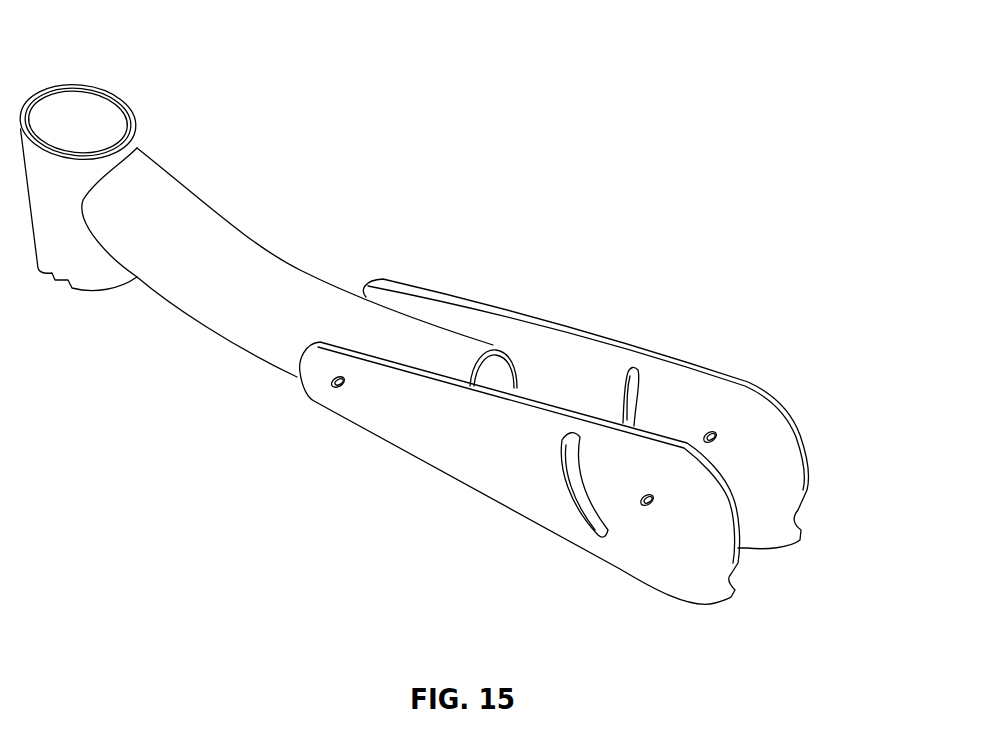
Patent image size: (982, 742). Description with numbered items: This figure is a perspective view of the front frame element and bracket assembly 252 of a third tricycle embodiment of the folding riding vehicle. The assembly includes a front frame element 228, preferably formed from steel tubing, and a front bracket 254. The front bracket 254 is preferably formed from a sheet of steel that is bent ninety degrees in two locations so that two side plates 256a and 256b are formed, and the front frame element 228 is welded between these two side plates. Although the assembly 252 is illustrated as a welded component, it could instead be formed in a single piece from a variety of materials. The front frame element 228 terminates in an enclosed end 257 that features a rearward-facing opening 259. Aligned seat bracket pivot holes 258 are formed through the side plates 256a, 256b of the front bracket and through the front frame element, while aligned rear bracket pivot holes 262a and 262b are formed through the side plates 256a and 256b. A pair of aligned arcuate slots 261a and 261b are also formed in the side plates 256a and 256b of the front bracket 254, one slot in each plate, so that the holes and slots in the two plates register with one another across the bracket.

The front frame element and bracket assembly 252 is at (165, 42).
The front frame element 228 is at (222, 337).
The front bracket 254 is at (355, 487).
The side plate 256a is at (627, 557).
The side plate 256b is at (762, 418).
The enclosed end 257 is at (496, 346).
The seat bracket pivot holes 258 is at (326, 386).
The rearward-facing opening 259 is at (517, 380).
The arcuate slot 261a is at (577, 510).
The arcuate slot 261b is at (650, 382).
The rear bracket pivot hole 262a is at (648, 508).
The rear bracket pivot hole 262b is at (720, 440).